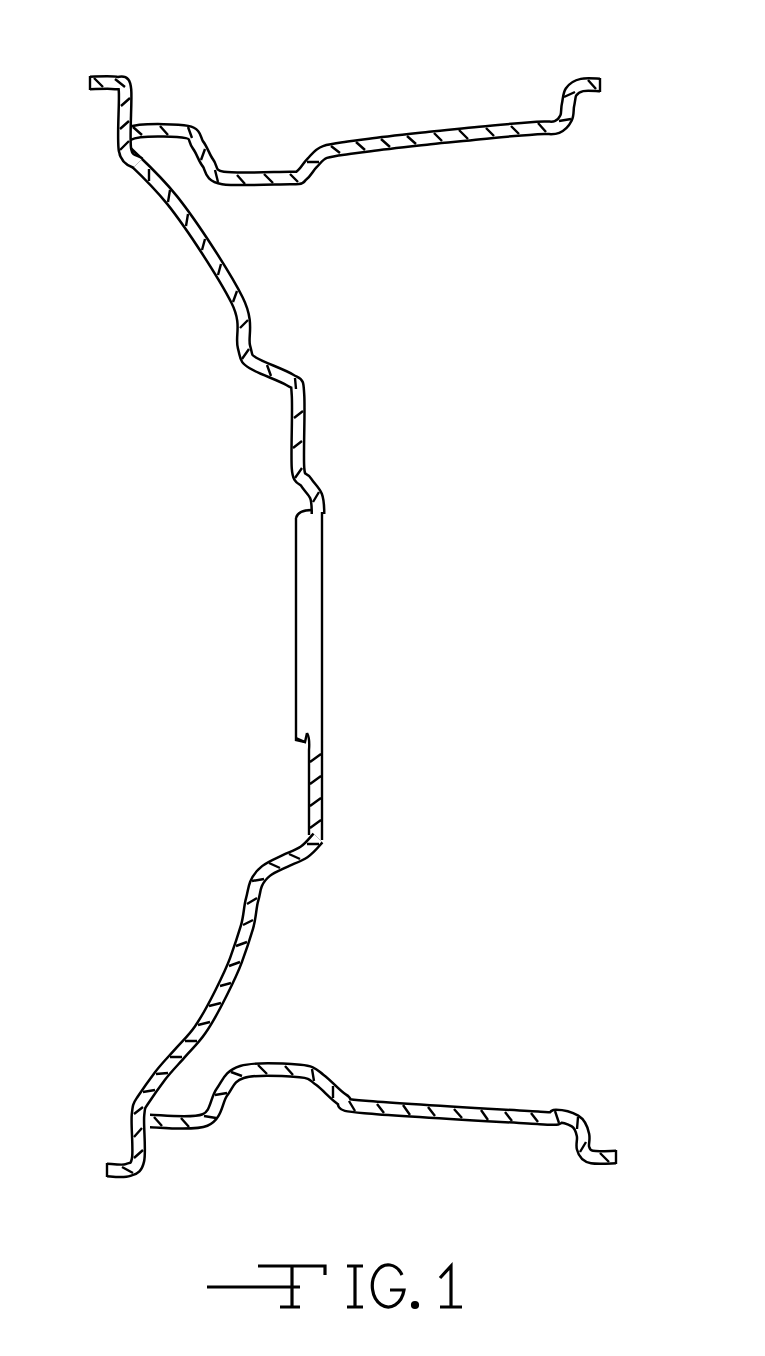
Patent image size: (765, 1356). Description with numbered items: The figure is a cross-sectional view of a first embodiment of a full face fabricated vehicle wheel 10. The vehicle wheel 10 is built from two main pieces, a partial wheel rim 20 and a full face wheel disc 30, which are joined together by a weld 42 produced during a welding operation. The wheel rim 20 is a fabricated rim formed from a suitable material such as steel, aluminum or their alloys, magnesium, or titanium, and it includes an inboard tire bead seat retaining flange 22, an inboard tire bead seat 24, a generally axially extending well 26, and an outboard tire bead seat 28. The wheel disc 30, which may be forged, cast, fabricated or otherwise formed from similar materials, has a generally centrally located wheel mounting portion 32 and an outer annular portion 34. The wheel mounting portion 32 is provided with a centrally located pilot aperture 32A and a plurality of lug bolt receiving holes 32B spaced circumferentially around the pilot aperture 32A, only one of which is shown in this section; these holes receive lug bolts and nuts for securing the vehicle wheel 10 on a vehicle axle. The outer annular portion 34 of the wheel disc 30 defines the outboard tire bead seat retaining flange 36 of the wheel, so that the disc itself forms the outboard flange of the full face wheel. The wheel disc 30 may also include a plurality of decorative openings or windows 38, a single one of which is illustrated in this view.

The vehicle wheel 10 is at (325, 614).
The wheel rim 20 is at (443, 155).
The inboard tire bead seat retaining flange 22 is at (562, 95).
The inboard tire bead seat 24 is at (540, 123).
The well 26 is at (373, 137).
The outboard tire bead seat 28 is at (160, 127).
The wheel disc 30 is at (312, 376).
The wheel mounting portion 32 is at (307, 802).
The pilot aperture 32A is at (320, 703).
The lug bolt receiving holes 32B is at (302, 427).
The outer annular portion 34 is at (172, 1047).
The outboard tire bead seat retaining flange 36 is at (147, 1147).
The decorative openings 38 is at (233, 290).
The weld 42 is at (135, 122).